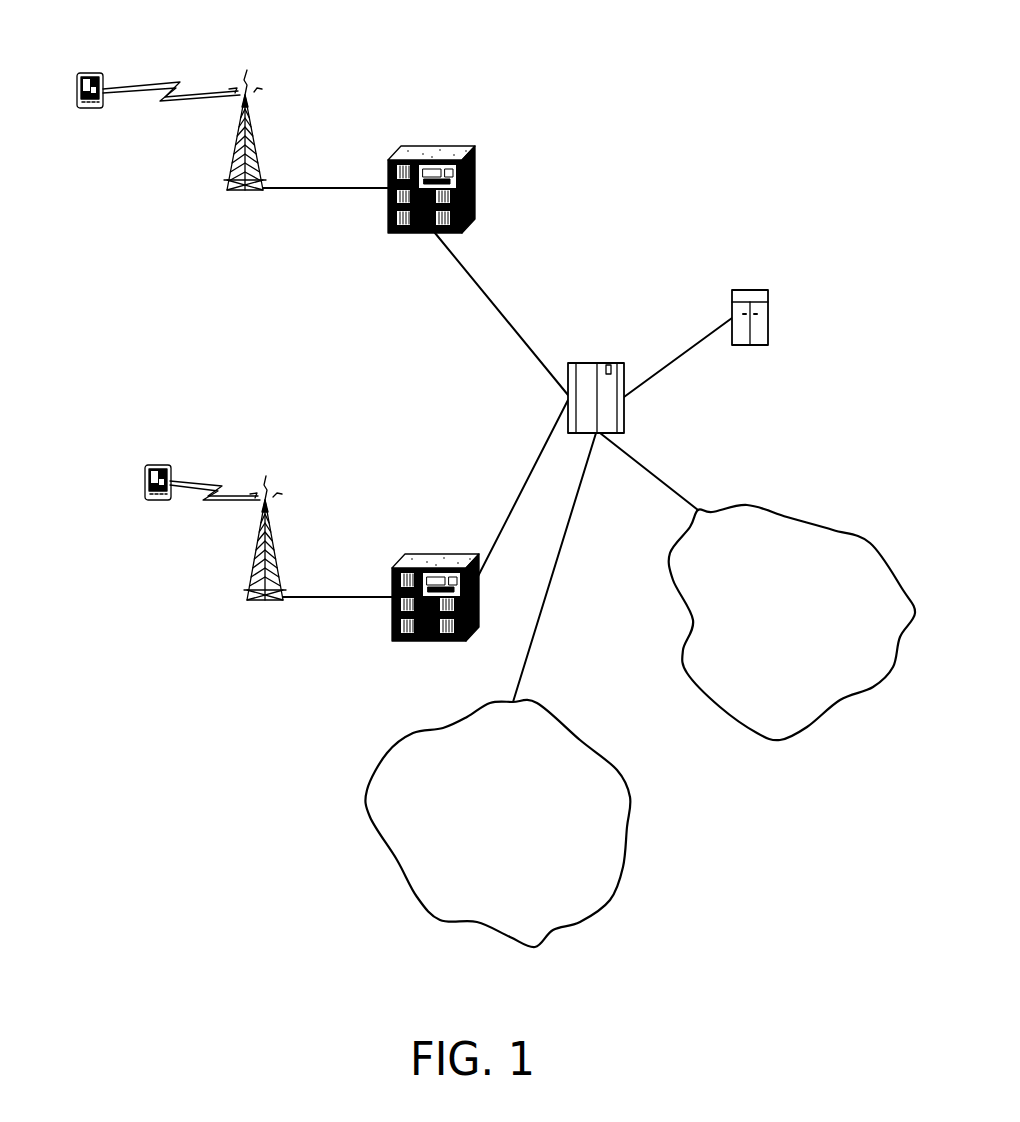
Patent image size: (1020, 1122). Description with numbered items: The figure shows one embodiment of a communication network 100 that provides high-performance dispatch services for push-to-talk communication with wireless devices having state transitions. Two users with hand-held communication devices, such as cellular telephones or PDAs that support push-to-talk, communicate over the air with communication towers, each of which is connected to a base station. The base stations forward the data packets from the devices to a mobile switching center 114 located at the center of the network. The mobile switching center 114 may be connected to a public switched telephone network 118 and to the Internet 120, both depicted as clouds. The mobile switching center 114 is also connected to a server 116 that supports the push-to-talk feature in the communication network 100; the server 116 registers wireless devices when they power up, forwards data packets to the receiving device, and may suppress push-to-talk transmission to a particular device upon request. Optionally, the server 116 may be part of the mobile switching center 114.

The communication network 100 is at (552, 61).
The mobile switching center 114 is at (613, 363).
The server 116 is at (763, 290).
The public switched telephone network 118 is at (787, 517).
The Internet 120 is at (580, 740).